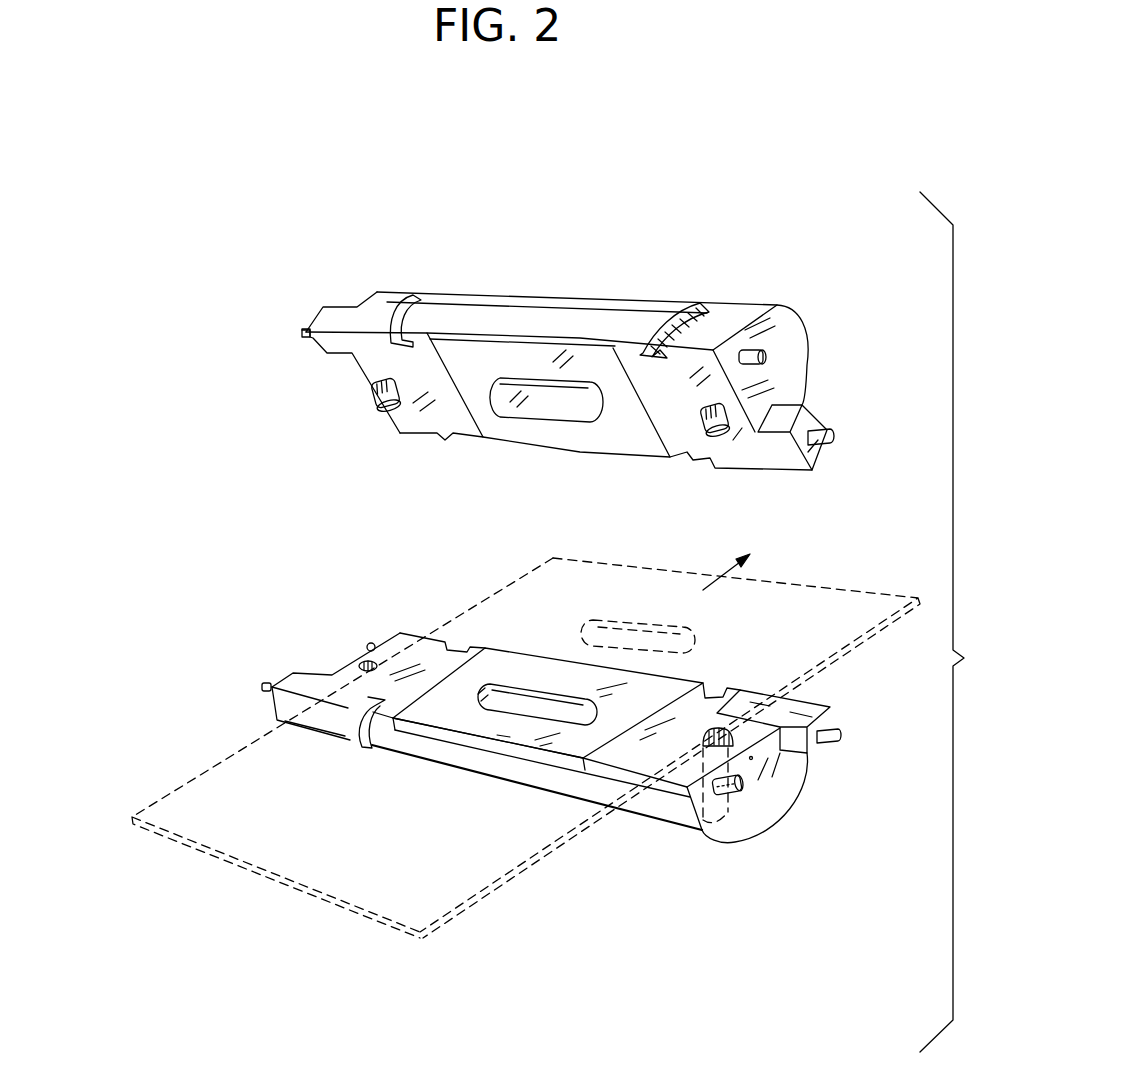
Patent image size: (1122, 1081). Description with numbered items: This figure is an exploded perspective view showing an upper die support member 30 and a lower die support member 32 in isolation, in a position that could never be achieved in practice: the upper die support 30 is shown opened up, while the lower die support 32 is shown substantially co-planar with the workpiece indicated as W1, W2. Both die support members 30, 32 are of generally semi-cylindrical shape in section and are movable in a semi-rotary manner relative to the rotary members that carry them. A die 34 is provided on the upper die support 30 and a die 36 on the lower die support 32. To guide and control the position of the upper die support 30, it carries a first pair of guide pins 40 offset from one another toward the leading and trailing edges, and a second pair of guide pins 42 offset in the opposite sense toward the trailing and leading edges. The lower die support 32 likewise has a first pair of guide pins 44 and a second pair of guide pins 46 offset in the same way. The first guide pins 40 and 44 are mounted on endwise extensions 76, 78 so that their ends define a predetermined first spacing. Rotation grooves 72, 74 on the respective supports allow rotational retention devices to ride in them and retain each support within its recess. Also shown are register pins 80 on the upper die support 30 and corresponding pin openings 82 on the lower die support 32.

The upper die support member 30 is at (507, 292).
The lower die support member 32 is at (777, 780).
The die 34 is at (558, 408).
The die 36 is at (527, 692).
The first guide pin 40 is at (308, 330).
The second guide pin 42 is at (767, 353).
The first guide pin 44 is at (267, 687).
The second guide pin 46 is at (367, 648).
The rotation groove 72 is at (687, 305).
The rotation groove 74 is at (362, 743).
The endwise extension 76 is at (335, 353).
The endwise extension 78 is at (293, 677).
The register pin 80 is at (380, 410).
The pin opening 82 is at (377, 657).
The workpiece W1 is at (215, 797).
The workpiece W2 is at (850, 620).